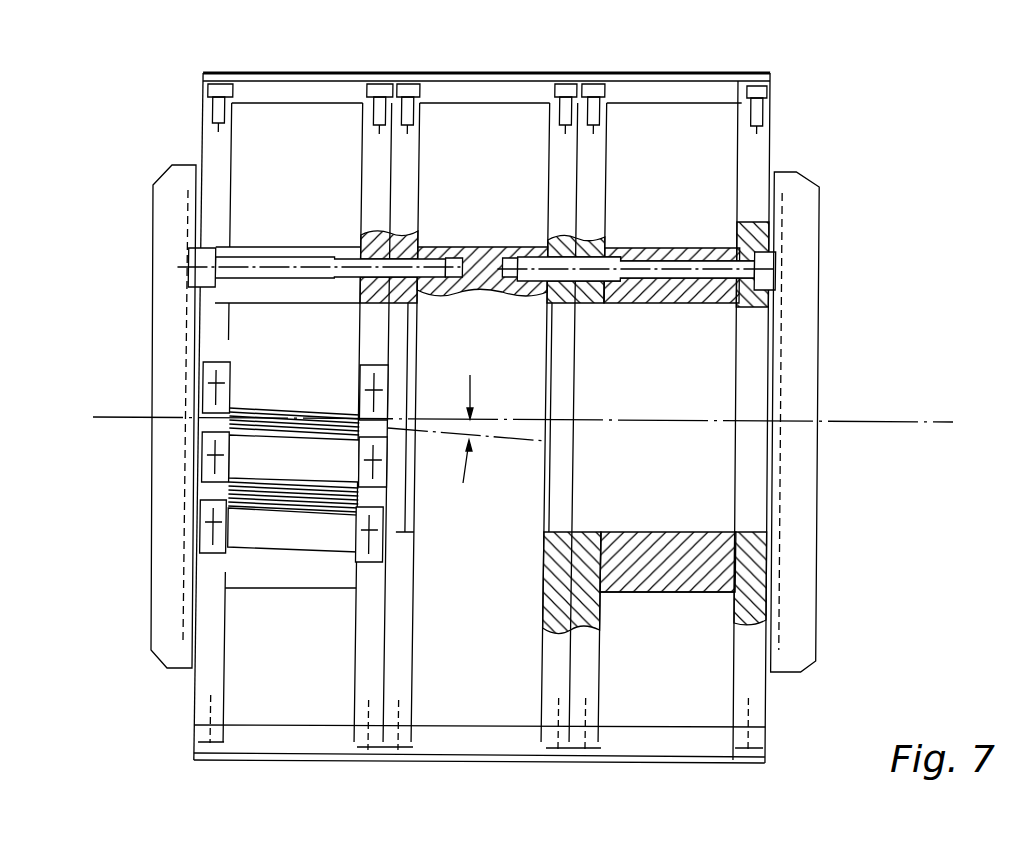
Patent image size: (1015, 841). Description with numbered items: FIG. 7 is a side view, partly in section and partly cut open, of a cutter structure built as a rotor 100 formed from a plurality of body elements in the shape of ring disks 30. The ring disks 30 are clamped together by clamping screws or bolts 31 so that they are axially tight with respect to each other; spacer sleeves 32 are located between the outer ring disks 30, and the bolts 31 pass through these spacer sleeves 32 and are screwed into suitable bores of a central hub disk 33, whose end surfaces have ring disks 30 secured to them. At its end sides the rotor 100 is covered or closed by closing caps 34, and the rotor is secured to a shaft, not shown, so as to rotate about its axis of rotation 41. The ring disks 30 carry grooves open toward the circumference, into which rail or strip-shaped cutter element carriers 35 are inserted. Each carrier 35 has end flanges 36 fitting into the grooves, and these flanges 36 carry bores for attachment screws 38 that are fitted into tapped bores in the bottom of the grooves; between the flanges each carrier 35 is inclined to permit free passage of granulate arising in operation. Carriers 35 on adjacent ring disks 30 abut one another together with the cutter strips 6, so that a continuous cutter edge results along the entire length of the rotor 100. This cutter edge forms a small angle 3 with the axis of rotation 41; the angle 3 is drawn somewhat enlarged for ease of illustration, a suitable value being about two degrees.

The rotor 100 is at (797, 138).
The ring disks 30 is at (217, 195).
The clamping screws or bolts 31 is at (275, 265).
The spacer sleeves 32 is at (458, 260).
The central hub disk 33 is at (488, 563).
The closing caps 34 is at (162, 360).
The cutter element carriers 35 is at (294, 88).
The end flanges 36 is at (218, 372).
The attachment screws 38 is at (600, 87).
The axis of rotation 41 is at (895, 422).
The cutter strips 6 is at (272, 412).
The angle 3 is at (472, 422).